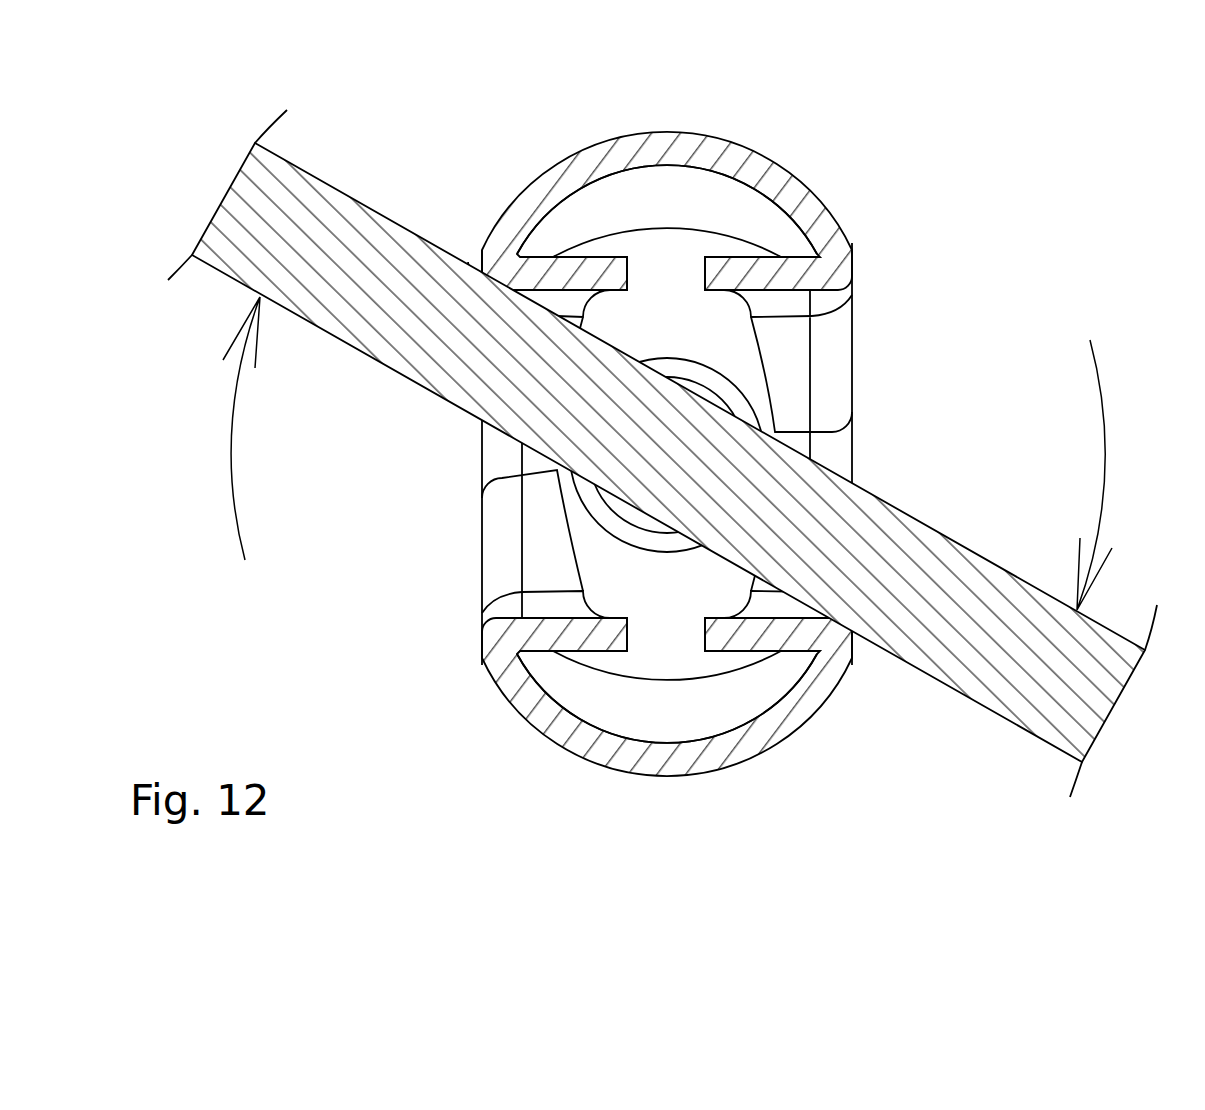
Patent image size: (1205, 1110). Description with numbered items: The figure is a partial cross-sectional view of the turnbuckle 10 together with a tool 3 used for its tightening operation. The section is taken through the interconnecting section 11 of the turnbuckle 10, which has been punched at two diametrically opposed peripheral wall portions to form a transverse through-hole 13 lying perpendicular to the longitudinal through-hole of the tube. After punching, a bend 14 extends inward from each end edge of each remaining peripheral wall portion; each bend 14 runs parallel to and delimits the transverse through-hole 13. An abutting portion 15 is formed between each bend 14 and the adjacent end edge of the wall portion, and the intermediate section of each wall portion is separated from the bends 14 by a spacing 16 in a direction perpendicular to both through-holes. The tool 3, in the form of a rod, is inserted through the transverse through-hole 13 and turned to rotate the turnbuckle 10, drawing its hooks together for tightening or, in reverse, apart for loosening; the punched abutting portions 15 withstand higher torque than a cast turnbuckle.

The tool 3 is at (341, 312).
The turnbuckle 10 is at (675, 453).
The interconnecting section 11 is at (655, 148).
The transverse through-hole 13 is at (783, 347).
The bend 14 is at (594, 272).
The abutting portion 15 is at (470, 266).
The spacing 16 is at (721, 204).